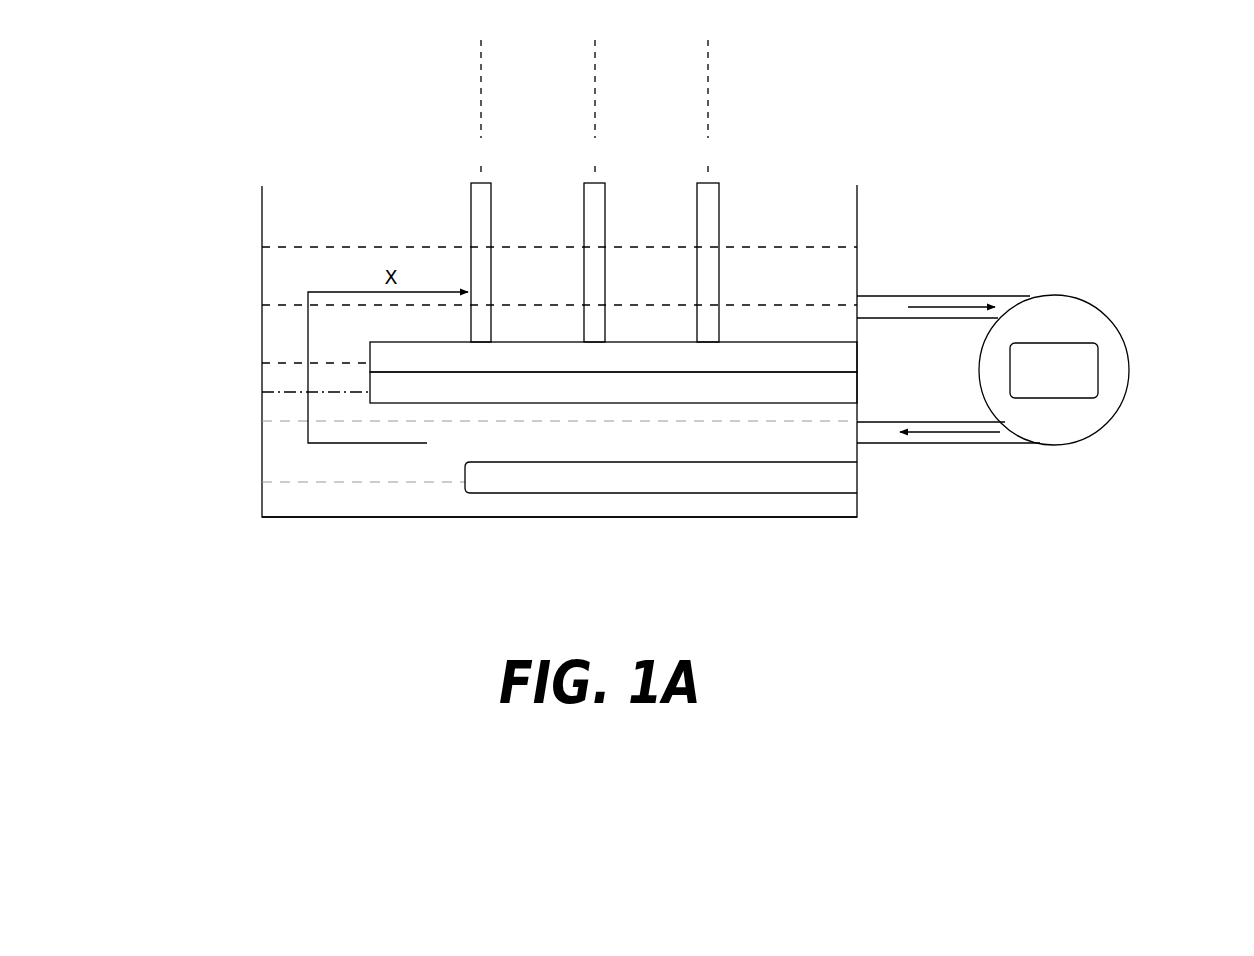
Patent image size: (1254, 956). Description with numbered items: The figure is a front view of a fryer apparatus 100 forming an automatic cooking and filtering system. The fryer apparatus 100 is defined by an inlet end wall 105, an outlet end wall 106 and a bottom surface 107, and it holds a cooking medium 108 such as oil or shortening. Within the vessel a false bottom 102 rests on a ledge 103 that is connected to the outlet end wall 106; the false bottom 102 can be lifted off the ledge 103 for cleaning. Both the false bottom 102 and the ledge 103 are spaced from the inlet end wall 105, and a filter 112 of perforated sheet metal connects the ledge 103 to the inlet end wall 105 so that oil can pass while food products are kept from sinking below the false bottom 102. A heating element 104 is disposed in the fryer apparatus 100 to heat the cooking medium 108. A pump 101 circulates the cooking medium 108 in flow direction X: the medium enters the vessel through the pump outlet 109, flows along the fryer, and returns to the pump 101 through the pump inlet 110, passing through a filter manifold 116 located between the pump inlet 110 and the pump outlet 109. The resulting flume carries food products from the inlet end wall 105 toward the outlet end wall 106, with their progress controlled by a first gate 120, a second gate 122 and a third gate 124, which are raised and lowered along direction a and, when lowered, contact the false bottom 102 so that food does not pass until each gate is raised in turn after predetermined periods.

The fryer apparatus 100 is at (247, 222).
The pump 101 is at (1096, 332).
The false bottom 102 is at (613, 357).
The ledge 103 is at (613, 387).
The heating element 104 is at (661, 477).
The inlet end wall 105 is at (258, 357).
The outlet end wall 106 is at (860, 247).
The bottom surface 107 is at (748, 520).
The cooking medium 108 is at (590, 191).
The pump outlet 109 is at (845, 432).
The pump inlet 110 is at (855, 305).
The filter 112 is at (283, 394).
The filter manifold 116 is at (1054, 370).
The first gate 120 is at (481, 191).
The second gate 122 is at (595, 191).
The third gate 124 is at (708, 191).